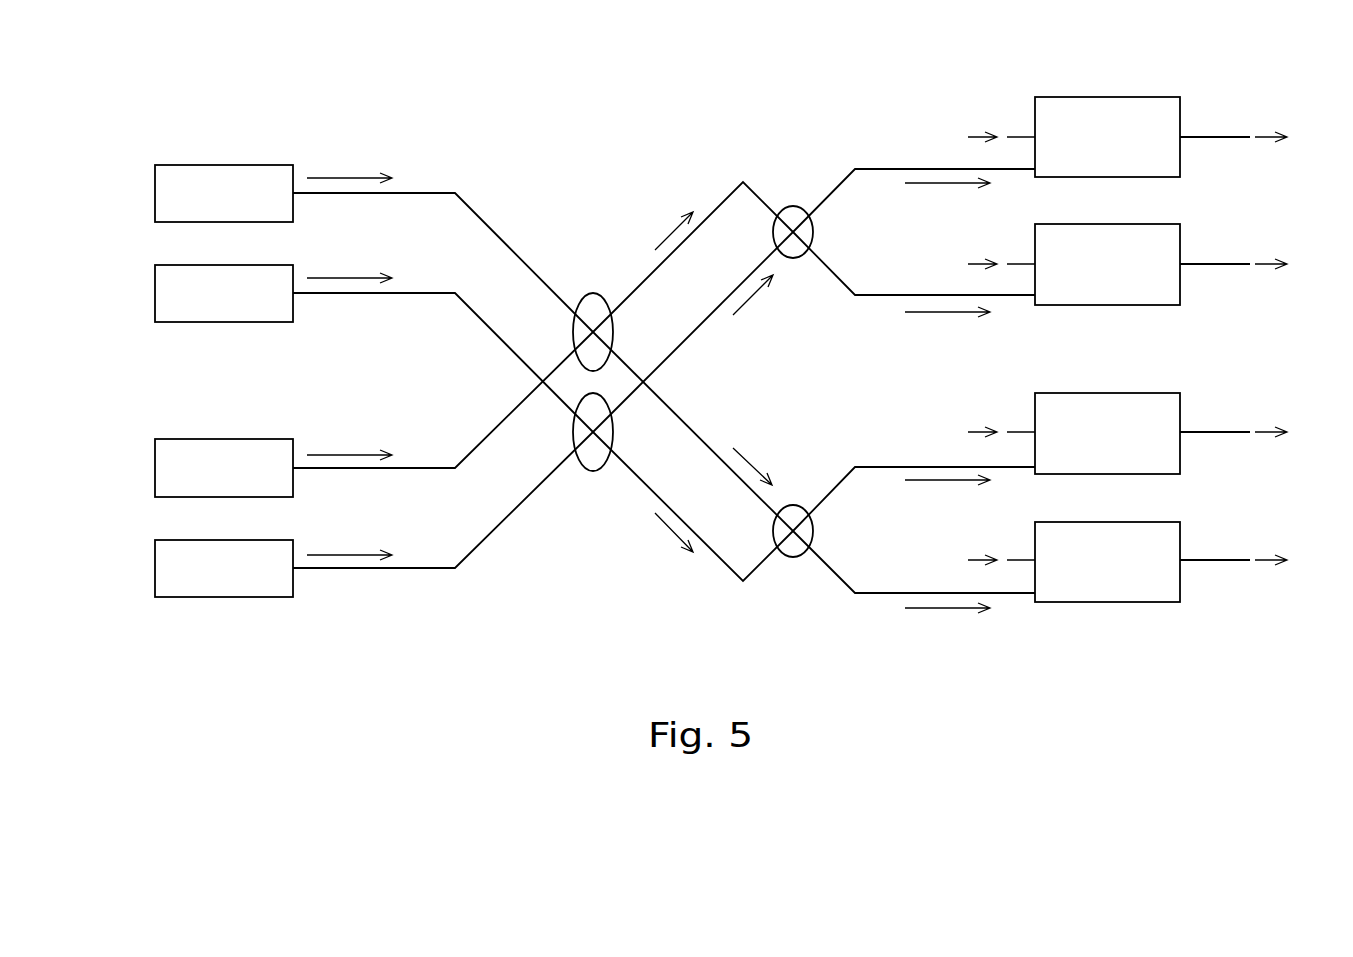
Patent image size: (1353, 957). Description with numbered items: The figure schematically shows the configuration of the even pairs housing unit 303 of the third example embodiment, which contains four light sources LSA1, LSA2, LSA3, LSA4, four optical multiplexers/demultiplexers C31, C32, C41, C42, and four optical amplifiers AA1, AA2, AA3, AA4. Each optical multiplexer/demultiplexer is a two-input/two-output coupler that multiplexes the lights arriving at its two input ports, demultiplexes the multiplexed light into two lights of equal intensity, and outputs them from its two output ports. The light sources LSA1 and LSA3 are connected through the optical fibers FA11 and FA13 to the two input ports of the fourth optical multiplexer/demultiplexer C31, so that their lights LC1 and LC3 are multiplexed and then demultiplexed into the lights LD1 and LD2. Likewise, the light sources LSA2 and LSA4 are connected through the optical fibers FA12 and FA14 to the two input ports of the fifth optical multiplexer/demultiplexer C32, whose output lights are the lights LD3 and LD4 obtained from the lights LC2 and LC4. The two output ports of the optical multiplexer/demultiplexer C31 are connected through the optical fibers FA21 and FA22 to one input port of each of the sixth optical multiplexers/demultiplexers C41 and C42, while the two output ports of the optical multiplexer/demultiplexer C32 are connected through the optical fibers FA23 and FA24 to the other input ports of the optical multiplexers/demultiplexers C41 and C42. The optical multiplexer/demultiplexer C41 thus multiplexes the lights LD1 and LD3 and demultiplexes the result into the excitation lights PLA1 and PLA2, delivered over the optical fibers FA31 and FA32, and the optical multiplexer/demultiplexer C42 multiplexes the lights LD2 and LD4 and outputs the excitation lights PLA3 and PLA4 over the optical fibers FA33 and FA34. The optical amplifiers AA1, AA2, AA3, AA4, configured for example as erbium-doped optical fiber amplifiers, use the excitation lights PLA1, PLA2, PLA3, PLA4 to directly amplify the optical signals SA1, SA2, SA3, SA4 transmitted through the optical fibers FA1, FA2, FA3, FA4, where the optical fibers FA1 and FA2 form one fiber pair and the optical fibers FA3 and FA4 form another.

The even pairs housing unit 303 is at (129, 139).
The light source LSA1 is at (190, 165).
The light source LSA2 is at (272, 322).
The light source LSA3 is at (190, 439).
The light source LSA4 is at (272, 597).
The light LC1 is at (349, 164).
The light LC2 is at (349, 264).
The light LC3 is at (349, 441).
The light LC4 is at (349, 541).
The optical fiber FA11 is at (432, 191).
The optical fiber FA12 is at (432, 291).
The optical fiber FA13 is at (432, 466).
The optical fiber FA14 is at (432, 566).
The optical multiplexer/demultiplexer C31 is at (593, 291).
The optical multiplexer/demultiplexer C32 is at (593, 485).
The optical fiber FA21 is at (735, 183).
The optical fiber FA22 is at (695, 430).
The optical fiber FA23 is at (695, 337).
The optical fiber FA24 is at (732, 582).
The light LD1 is at (663, 226).
The light LD2 is at (767, 463).
The light LD3 is at (767, 298).
The light LD4 is at (661, 536).
The optical multiplexer/demultiplexer C41 is at (793, 206).
The optical multiplexer/demultiplexer C42 is at (793, 558).
The optical fiber FA31 is at (880, 168).
The optical fiber FA32 is at (880, 296).
The optical fiber FA33 is at (880, 466).
The optical fiber FA34 is at (880, 594).
The excitation light PLA1 is at (947, 198).
The excitation light PLA2 is at (947, 326).
The excitation light PLA3 is at (947, 494).
The excitation light PLA4 is at (947, 622).
The optical signal SA1 is at (1128, 137).
The optical signal SA2 is at (1128, 264).
The optical signal SA3 is at (1128, 432).
The optical signal SA4 is at (1128, 560).
The optical amplifier AA1 is at (1180, 155).
The optical amplifier AA2 is at (1180, 283).
The optical amplifier AA3 is at (1180, 453).
The optical amplifier AA4 is at (1180, 583).
The optical fiber FA1 is at (1237, 136).
The optical fiber FA2 is at (1237, 263).
The optical fiber FA3 is at (1237, 431).
The optical fiber FA4 is at (1237, 559).